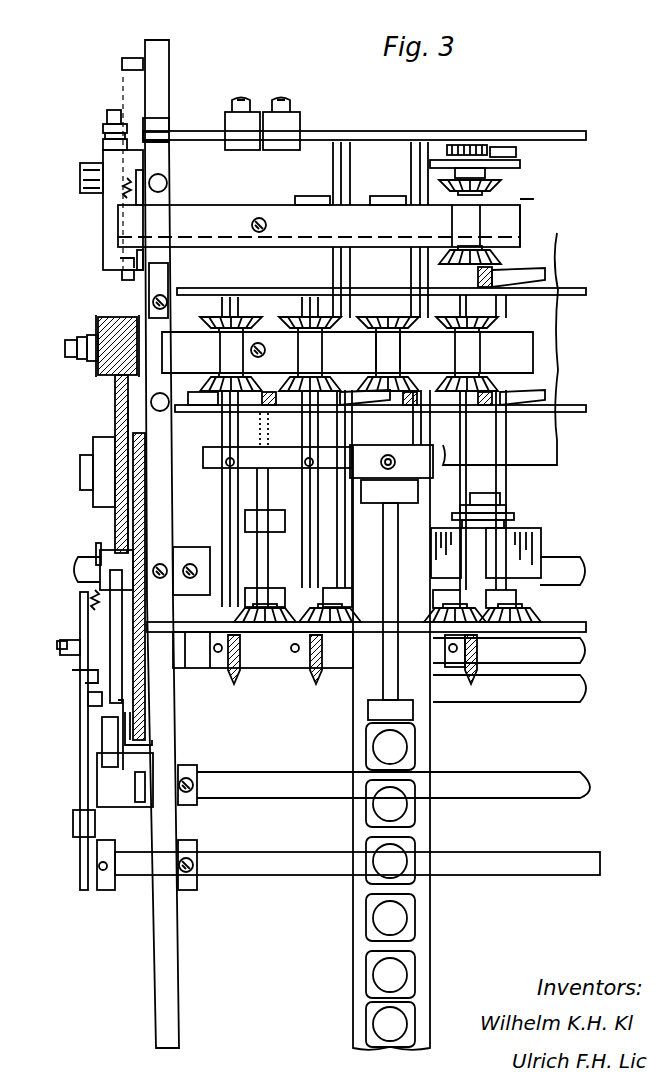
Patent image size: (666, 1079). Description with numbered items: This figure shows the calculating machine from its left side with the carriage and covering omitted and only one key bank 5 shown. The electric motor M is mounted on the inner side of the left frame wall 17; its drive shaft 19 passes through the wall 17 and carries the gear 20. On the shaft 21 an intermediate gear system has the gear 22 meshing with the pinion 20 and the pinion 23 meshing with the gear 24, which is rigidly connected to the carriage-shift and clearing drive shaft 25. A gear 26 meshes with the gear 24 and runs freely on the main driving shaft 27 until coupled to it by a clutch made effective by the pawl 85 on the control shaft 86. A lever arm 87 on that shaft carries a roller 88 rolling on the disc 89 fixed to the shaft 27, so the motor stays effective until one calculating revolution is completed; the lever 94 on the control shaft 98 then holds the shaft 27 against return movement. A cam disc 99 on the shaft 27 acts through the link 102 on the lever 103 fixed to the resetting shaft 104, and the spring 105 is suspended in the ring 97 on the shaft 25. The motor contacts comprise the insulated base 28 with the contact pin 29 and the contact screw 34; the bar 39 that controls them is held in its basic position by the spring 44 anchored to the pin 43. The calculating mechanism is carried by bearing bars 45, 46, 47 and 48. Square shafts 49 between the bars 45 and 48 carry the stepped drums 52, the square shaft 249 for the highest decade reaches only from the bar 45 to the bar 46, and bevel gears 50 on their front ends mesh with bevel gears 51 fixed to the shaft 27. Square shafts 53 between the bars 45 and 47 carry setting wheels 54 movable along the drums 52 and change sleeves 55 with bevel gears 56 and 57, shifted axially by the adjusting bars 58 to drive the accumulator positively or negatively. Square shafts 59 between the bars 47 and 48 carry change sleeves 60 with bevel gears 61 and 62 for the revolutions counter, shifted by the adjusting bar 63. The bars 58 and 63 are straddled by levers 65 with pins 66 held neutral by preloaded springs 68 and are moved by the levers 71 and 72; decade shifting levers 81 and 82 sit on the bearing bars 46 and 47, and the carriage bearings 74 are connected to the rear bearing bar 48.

The pin 43 is at (146, 58).
The left frame wall 17 is at (166, 995).
The spring 44 is at (122, 66).
The contact pin 29 is at (110, 118).
The bar 39 is at (148, 135).
The insulated base 28 is at (120, 166).
The contact screw 34 is at (95, 195).
The pins 66 is at (132, 183).
The levers 65 is at (143, 200).
The preloaded spring 68 is at (120, 263).
The bearing bar 48 is at (586, 135).
The bearings 74 is at (290, 130).
The square shafts 49 is at (345, 172).
The square shafts 59 is at (471, 145).
The bevel gear 61 is at (505, 188).
The adjusting bar 63 is at (212, 217).
The lever 71 is at (262, 218).
The change sleeves 60 is at (462, 220).
The bevel gear 62 is at (448, 258).
The decade shifting lever 82 is at (547, 275).
The electric motor M is at (545, 458).
The bearing bar 47 is at (586, 292).
The square shafts 53 is at (310, 305).
The adjusting bars 58 is at (520, 360).
The change sleeves 55 is at (232, 352).
The lever 72 is at (270, 351).
The bevel gear 57 is at (448, 374).
The bevel gear 56 is at (505, 322).
The decade shifting lever 81 is at (547, 392).
The bearing bar 46 is at (586, 411).
The gear 20 is at (100, 322).
The drive shaft 19 is at (65, 346).
The gear 22 is at (116, 378).
The pinion 23 is at (115, 432).
The shaft 21 is at (80, 475).
The gear 24 is at (135, 510).
The pawl 85 is at (142, 752).
The gear 26 is at (175, 592).
The square shaft 249 is at (258, 485).
The bevel gears 50 is at (240, 612).
The bearing bar 45 is at (586, 627).
The main driving shaft 27 is at (60, 647).
The bevel gears 51 is at (316, 680).
The stepped drums 52 is at (445, 548).
The setting wheel 54 is at (490, 514).
The shaft 25 is at (75, 570).
The ring 97 is at (96, 553).
The disc 89 is at (118, 650).
The spring 105 is at (92, 597).
The link 102 is at (80, 748).
The cam disc 99 is at (85, 700).
The lever 94 is at (90, 708).
The roller 88 is at (110, 750).
The lever arm 87 is at (108, 800).
The lever 103 is at (97, 860).
The shaft 104 is at (247, 862).
The control shaft 86 is at (578, 785).
The control shaft 98 is at (575, 690).
The key bank 5 is at (432, 920).